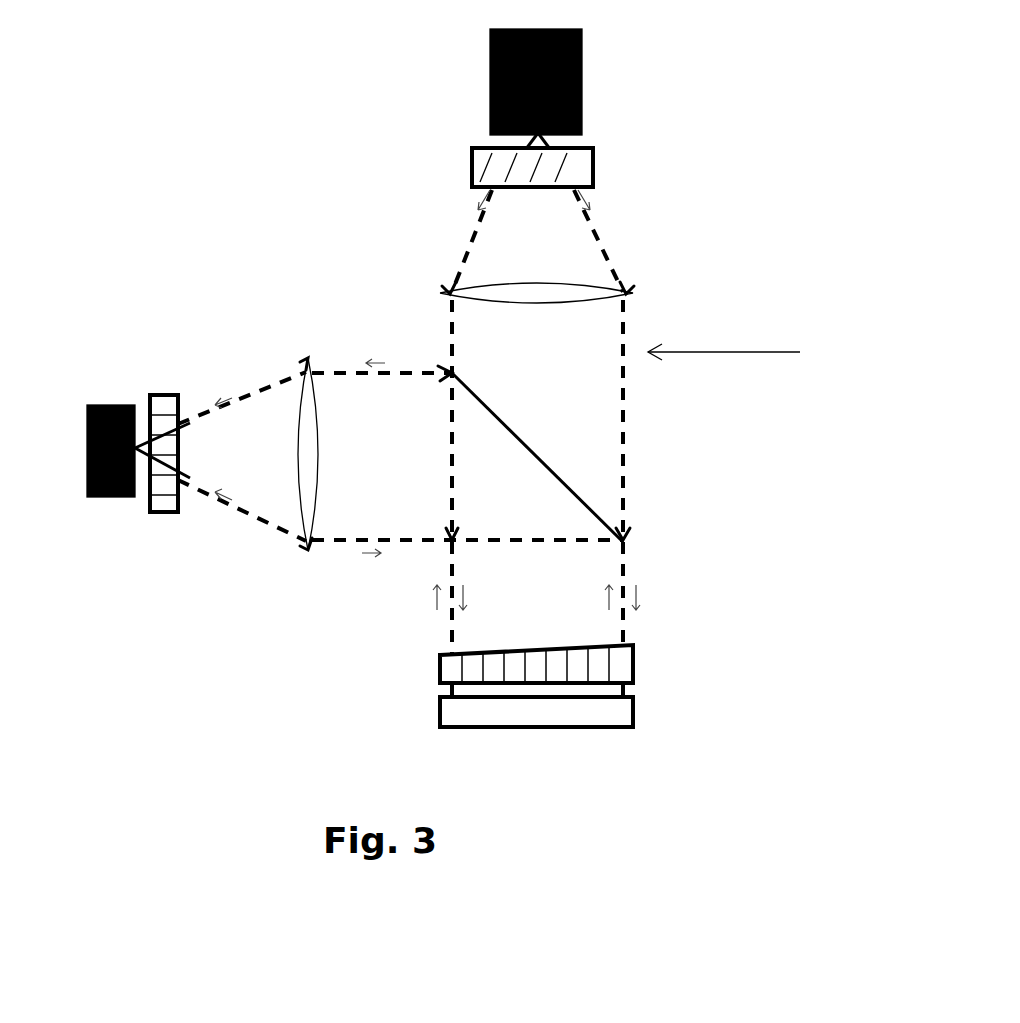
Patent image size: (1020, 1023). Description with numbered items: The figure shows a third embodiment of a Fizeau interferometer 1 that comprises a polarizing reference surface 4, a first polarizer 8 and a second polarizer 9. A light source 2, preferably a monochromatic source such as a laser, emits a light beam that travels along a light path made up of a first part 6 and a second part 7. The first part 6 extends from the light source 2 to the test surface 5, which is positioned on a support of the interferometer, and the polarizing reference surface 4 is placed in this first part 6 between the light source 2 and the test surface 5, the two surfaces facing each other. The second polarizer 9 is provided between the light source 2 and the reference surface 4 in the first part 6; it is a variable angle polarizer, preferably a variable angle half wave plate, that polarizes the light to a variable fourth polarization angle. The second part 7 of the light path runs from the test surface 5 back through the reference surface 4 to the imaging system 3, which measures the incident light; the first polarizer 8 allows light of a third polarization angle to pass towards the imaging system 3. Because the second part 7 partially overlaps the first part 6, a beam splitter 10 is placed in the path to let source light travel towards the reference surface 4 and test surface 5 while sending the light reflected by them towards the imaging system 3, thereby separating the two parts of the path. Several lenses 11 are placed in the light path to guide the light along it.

The Fizeau interferometer 1 is at (290, 202).
The light source 2 is at (582, 75).
The imaging system 3 is at (105, 403).
The polarizing reference surface 4 is at (635, 660).
The test surface 5 is at (635, 713).
The first part of the light path 6 is at (739, 352).
The second part of the light path 7 is at (340, 356).
The first polarizer 8 is at (167, 393).
The second polarizer 9 is at (594, 165).
The beam splitter 10 is at (626, 281).
The lenses 11 is at (560, 477).